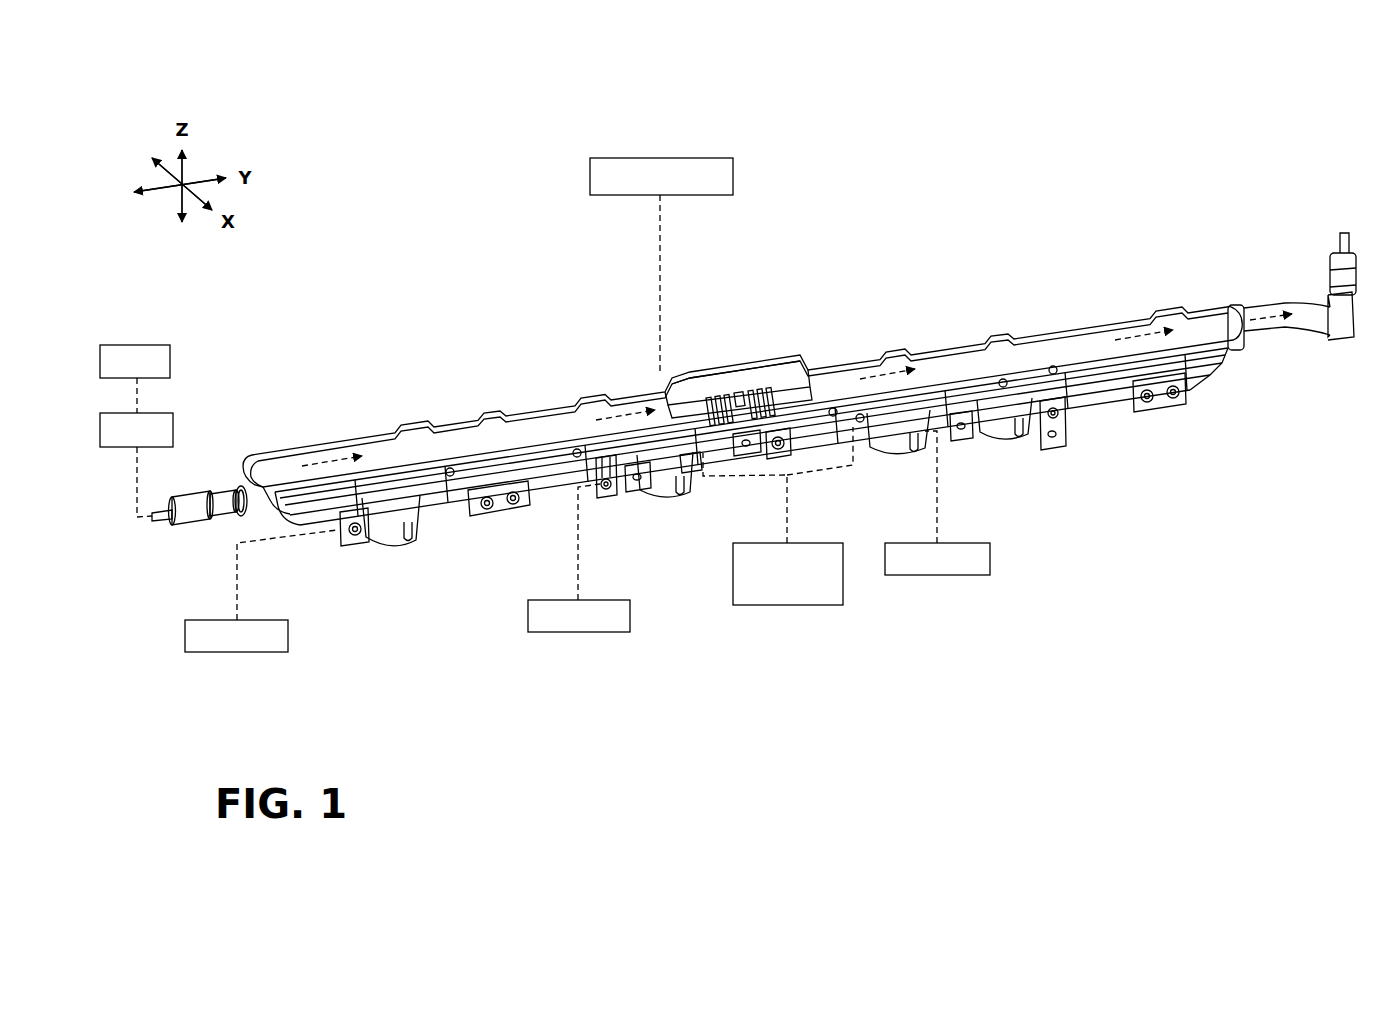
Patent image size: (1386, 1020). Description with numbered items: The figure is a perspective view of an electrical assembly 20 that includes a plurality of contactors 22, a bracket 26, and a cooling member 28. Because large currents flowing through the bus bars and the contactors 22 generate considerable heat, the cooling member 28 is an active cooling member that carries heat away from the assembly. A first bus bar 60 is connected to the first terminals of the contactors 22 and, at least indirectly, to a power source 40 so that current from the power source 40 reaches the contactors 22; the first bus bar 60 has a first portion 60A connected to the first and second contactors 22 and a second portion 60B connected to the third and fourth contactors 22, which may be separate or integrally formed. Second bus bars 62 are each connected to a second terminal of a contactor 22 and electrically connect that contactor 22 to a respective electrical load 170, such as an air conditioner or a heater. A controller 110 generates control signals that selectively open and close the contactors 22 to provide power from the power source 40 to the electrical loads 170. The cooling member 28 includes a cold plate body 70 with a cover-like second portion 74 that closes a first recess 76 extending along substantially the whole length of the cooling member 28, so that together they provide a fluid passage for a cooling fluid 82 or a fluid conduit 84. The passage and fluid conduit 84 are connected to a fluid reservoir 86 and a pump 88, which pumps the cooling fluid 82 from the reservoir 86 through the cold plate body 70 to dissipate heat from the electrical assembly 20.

The electrical assembly 20 is at (345, 125).
The contactors 22 is at (400, 552).
The bracket 26 is at (690, 478).
The cooling member 28 is at (425, 432).
The power source 40 is at (790, 605).
The first bus bar 60 is at (805, 296).
The first portion 60A is at (720, 370).
The second portion 60B is at (774, 366).
The second bus bars 62 is at (614, 500).
The body 70 is at (503, 395).
The second portion 74 is at (243, 449).
The first recess 76 is at (287, 439).
The cooling fluid 82 is at (336, 440).
The fluid conduit 84 is at (195, 503).
The fluid reservoir 86 is at (172, 360).
The pump 88 is at (176, 420).
The controller 110 is at (672, 158).
The electrical loads 170 is at (185, 635).